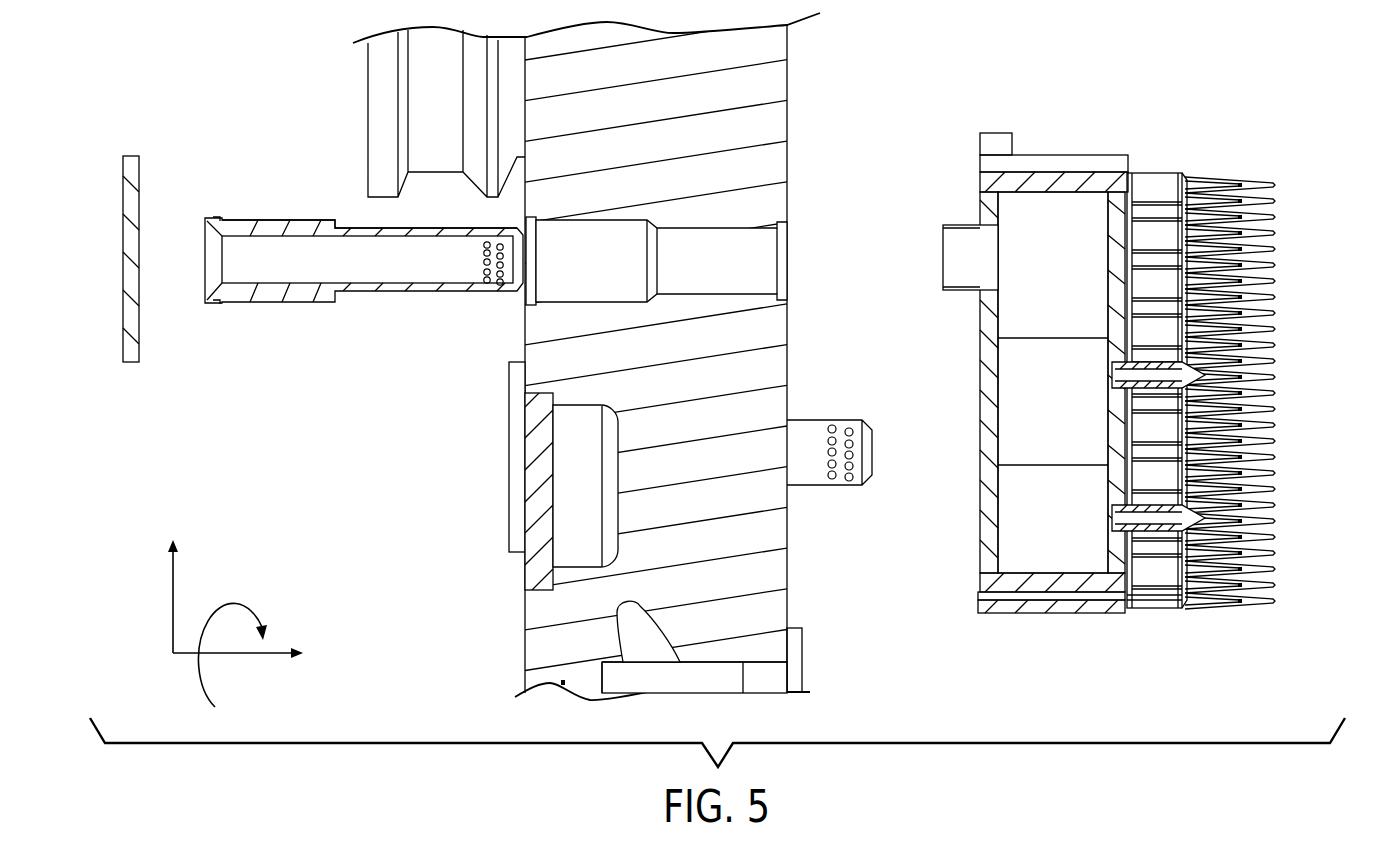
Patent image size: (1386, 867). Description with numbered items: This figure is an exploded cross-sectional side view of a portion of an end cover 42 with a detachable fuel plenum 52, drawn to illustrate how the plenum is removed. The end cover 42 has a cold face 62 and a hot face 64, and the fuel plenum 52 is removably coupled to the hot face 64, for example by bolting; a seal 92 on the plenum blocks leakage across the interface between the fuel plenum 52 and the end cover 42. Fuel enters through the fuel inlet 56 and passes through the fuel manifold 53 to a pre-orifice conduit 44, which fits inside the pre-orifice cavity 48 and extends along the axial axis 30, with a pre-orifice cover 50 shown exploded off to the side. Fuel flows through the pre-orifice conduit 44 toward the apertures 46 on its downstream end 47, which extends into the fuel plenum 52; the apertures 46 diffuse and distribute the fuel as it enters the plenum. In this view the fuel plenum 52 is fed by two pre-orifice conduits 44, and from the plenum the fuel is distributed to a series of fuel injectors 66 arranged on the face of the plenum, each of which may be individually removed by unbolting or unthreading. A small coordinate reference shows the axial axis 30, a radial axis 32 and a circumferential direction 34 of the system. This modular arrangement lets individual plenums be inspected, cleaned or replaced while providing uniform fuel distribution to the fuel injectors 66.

The axial axis 30 is at (232, 655).
The vertical axis 32 is at (175, 602).
The rotation direction 34 is at (197, 675).
The end cover 42 is at (744, 17).
The pre-orifice conduit 44 is at (377, 268).
The apertures 46 is at (482, 272).
The downstream end 47 is at (488, 228).
The pre-orifice cavity 48 is at (572, 283).
The pre-orifice cover 50 is at (123, 255).
The fuel plenum 52 is at (1068, 225).
The fuel manifold 53 is at (568, 543).
The fuel inlet 56 is at (348, 100).
The cold face 62 is at (525, 662).
The hot face 64 is at (797, 652).
The fuel injectors 66 is at (1272, 250).
The seal 92 is at (980, 190).